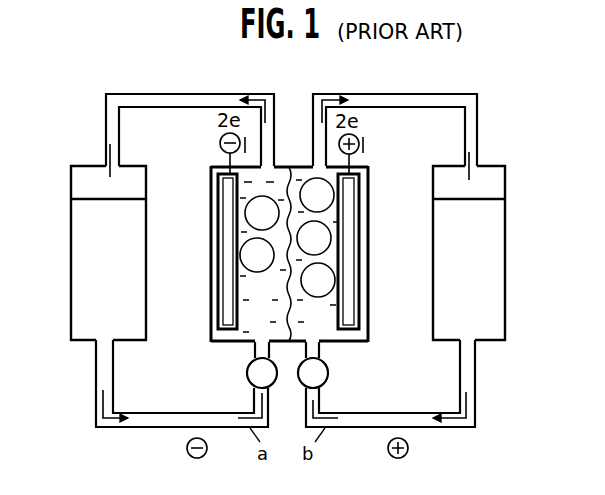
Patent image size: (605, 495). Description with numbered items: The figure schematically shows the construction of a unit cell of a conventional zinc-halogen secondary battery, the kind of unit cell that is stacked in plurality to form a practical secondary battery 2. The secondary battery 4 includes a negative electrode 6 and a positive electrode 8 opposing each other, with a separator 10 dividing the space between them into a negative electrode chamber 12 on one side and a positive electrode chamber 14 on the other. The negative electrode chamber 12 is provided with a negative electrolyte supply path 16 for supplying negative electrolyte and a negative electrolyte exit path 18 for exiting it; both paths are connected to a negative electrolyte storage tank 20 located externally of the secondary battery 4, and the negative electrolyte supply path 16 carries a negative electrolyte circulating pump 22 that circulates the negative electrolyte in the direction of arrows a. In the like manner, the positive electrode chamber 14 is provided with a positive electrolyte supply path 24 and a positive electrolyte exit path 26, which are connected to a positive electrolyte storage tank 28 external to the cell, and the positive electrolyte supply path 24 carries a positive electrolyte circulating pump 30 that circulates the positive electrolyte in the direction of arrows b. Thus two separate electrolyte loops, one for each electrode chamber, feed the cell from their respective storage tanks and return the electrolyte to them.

The practical secondary battery 2 is at (376, 166).
The secondary battery 4 is at (368, 327).
The negative electrode 6 is at (230, 222).
The positive electrode 8 is at (350, 228).
The separator 10 is at (282, 167).
The negative electrode chamber 12 is at (262, 347).
The positive electrode chamber 14 is at (316, 347).
The negative electrolyte supply path 16 is at (138, 428).
The negative electrolyte exit path 18 is at (200, 94).
The negative electrolyte storage tank 20 is at (71, 263).
The negative electrolyte circulating pump 22 is at (248, 373).
The positive electrolyte supply path 24 is at (353, 429).
The positive electrolyte exit path 26 is at (380, 94).
The positive electrolyte storage tank 28 is at (505, 308).
The positive electrolyte circulating pump 30 is at (328, 375).